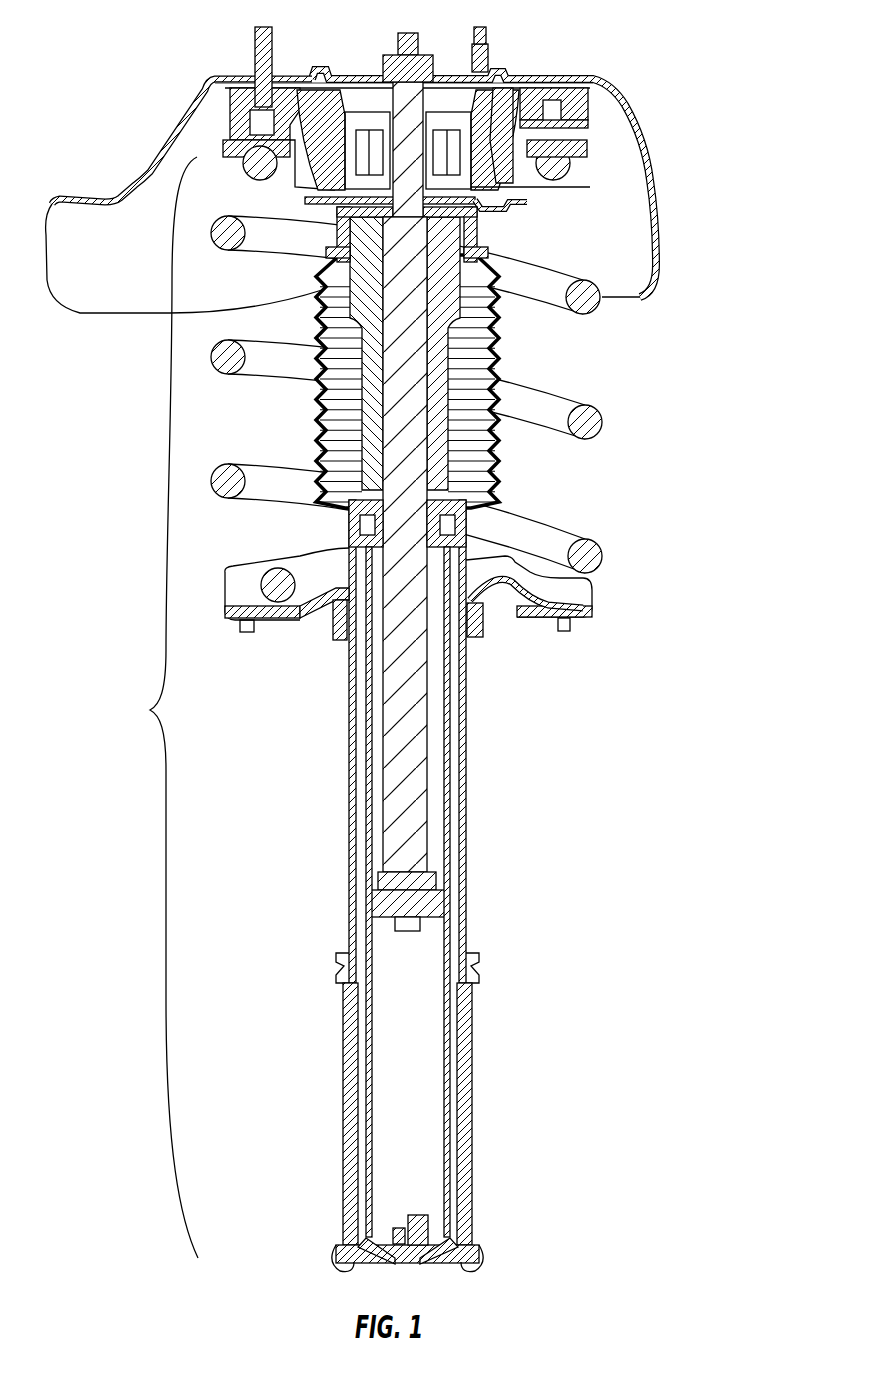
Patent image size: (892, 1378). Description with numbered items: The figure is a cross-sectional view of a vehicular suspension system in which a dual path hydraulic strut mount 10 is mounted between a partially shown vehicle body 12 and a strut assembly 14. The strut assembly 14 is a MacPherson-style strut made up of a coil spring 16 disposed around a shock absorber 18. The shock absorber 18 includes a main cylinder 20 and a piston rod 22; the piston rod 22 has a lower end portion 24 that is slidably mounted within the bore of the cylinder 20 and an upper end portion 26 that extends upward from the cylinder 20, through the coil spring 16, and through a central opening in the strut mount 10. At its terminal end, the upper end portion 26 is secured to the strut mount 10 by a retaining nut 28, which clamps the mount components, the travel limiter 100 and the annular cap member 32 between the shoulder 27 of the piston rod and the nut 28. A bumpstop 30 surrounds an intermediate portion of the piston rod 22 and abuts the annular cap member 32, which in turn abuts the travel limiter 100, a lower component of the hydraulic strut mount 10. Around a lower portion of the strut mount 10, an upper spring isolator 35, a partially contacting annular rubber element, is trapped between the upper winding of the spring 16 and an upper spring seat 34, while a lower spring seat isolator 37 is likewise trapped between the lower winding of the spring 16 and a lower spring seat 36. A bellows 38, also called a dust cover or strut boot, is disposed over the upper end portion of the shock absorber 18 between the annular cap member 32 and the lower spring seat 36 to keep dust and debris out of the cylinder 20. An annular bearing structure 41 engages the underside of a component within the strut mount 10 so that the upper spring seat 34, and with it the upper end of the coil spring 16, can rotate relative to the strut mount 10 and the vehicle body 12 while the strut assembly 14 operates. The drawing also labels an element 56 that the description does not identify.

The dual path hydraulic strut mount 10 is at (300, 88).
The vehicle body 12 is at (650, 142).
The strut assembly 14 is at (154, 707).
The coil spring 16 is at (600, 420).
The shock absorber 18 is at (452, 884).
The main cylinder 20 is at (447, 1123).
The piston rod 22 is at (412, 735).
The lower end portion 24 is at (420, 824).
The upper end portion 26 is at (407, 42).
The shoulder 27 is at (332, 206).
The retaining nut 28 is at (389, 64).
The bumpstop 30 is at (498, 346).
The annular cap member 32 is at (478, 240).
The upper spring seat 34 is at (588, 122).
The upper spring isolator 35 is at (588, 148).
The lower spring seat 36 is at (270, 624).
The lower spring seat isolator 37 is at (582, 598).
The bellows 38 is at (500, 452).
The annular bearing structure 41 is at (572, 100).
The mounting bolts 56 is at (256, 48).
The travel limiter 100 is at (506, 210).